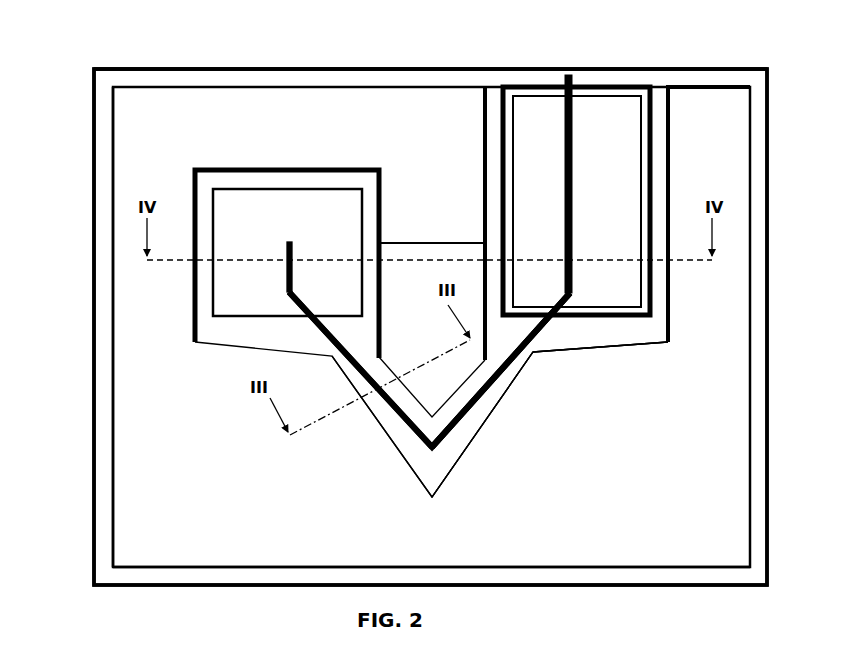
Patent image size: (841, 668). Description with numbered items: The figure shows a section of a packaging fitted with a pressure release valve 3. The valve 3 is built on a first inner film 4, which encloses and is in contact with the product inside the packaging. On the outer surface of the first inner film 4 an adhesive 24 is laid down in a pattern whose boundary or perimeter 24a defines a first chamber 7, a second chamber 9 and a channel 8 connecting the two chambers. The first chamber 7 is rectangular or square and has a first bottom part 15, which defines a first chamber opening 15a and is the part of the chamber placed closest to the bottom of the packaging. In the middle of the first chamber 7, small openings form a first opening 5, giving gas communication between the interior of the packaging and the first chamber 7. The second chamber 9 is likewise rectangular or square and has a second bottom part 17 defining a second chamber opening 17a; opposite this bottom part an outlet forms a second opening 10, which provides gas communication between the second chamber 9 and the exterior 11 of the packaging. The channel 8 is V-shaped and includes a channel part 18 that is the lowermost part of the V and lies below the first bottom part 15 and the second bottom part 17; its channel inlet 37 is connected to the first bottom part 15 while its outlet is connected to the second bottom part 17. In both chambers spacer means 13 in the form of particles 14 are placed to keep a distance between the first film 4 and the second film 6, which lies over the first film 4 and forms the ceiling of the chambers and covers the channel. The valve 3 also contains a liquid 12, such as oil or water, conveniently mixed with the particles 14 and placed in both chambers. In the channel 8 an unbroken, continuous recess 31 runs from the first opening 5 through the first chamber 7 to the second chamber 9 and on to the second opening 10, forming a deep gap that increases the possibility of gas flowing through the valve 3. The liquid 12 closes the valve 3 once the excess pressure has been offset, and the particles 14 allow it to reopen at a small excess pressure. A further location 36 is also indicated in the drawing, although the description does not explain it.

The pressure release valve 3 is at (84, 134).
The first inner film 4 is at (93, 480).
The first opening 5 is at (296, 262).
The second film 6 is at (140, 518).
The first chamber 7 is at (207, 320).
The channel 8 is at (475, 428).
The second chamber 9 is at (675, 97).
The second opening 10 is at (628, 82).
The exterior 11 is at (546, 51).
The liquid 12 is at (242, 205).
The spacer means 13 is at (460, 388).
The particles 14 is at (270, 305).
The first bottom part 15 is at (215, 338).
The first chamber opening 15a is at (357, 334).
The second bottom part 17 is at (657, 327).
The second chamber opening 17a is at (520, 360).
The channel part 18 is at (437, 480).
The adhesive 24 is at (265, 120).
The boundary or perimeter 24a is at (292, 150).
The recess 31 is at (392, 440).
The junction 36 is at (533, 353).
The channel inlet 37 is at (357, 345).